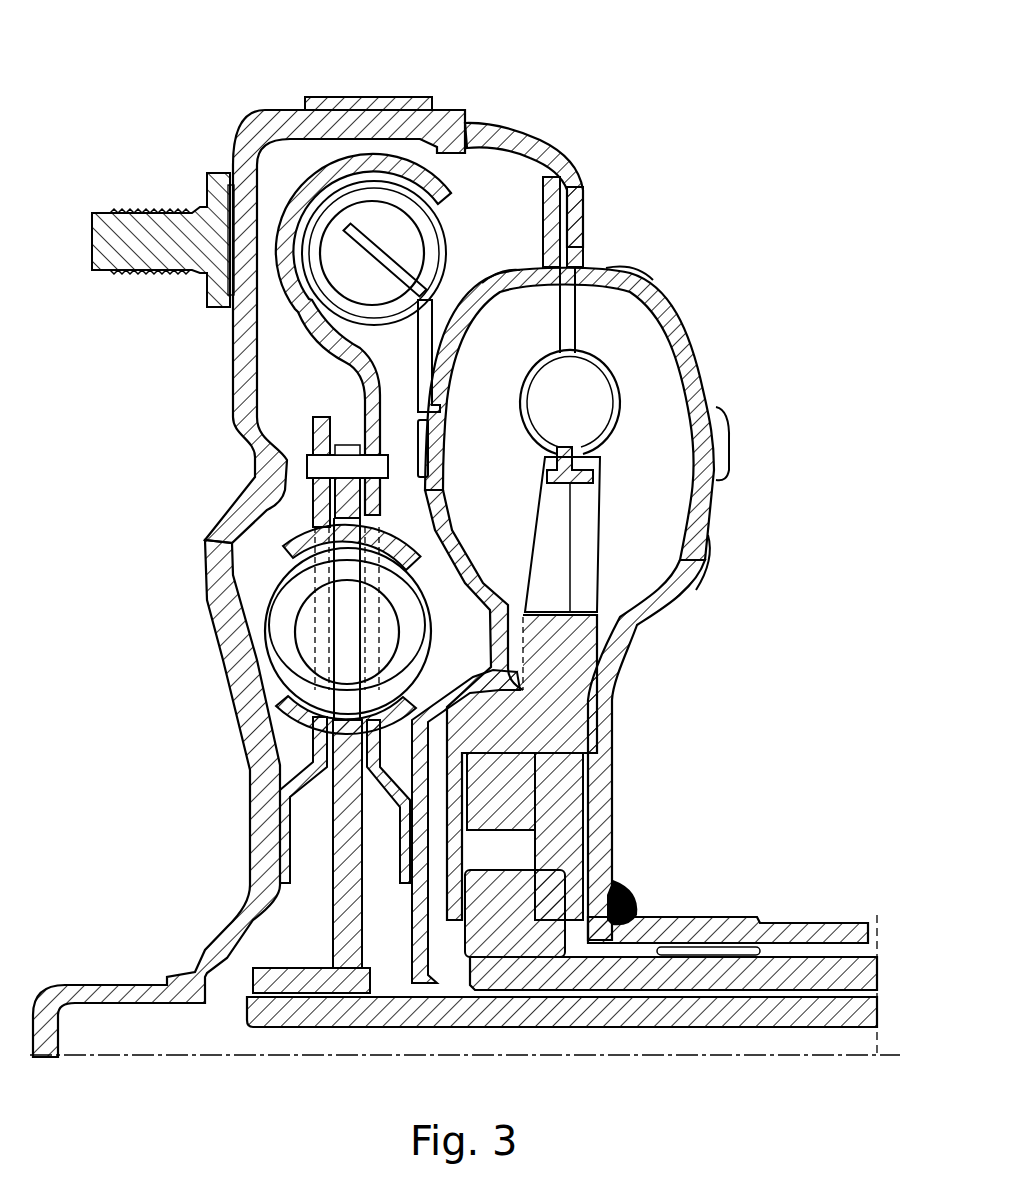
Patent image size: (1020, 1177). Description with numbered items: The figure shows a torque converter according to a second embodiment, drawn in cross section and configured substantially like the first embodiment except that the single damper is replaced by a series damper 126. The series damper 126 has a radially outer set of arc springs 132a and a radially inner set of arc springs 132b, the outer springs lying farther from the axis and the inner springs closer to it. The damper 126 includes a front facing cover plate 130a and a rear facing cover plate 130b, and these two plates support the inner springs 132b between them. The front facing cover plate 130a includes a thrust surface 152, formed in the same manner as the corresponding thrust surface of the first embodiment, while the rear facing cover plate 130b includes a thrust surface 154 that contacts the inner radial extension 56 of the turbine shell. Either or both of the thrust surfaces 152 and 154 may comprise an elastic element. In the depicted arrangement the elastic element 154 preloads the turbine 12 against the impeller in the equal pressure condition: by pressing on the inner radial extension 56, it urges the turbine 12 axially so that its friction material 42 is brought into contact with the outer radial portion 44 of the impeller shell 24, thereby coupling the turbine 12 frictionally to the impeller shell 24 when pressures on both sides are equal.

The series damper 126 is at (292, 166).
The radially outer set of arc springs 132a is at (450, 243).
The friction material 42 is at (583, 190).
The outer radial portion 44 is at (583, 215).
The impeller shell 24 is at (688, 345).
The turbine 12 is at (447, 475).
The radially inner set of arc springs 132b is at (283, 622).
The front facing cover plate 130a is at (283, 787).
The thrust surface 152 is at (273, 833).
The rear facing cover plate 130b is at (415, 772).
The thrust surface 154 is at (415, 828).
The inner radial extension 56 is at (415, 915).